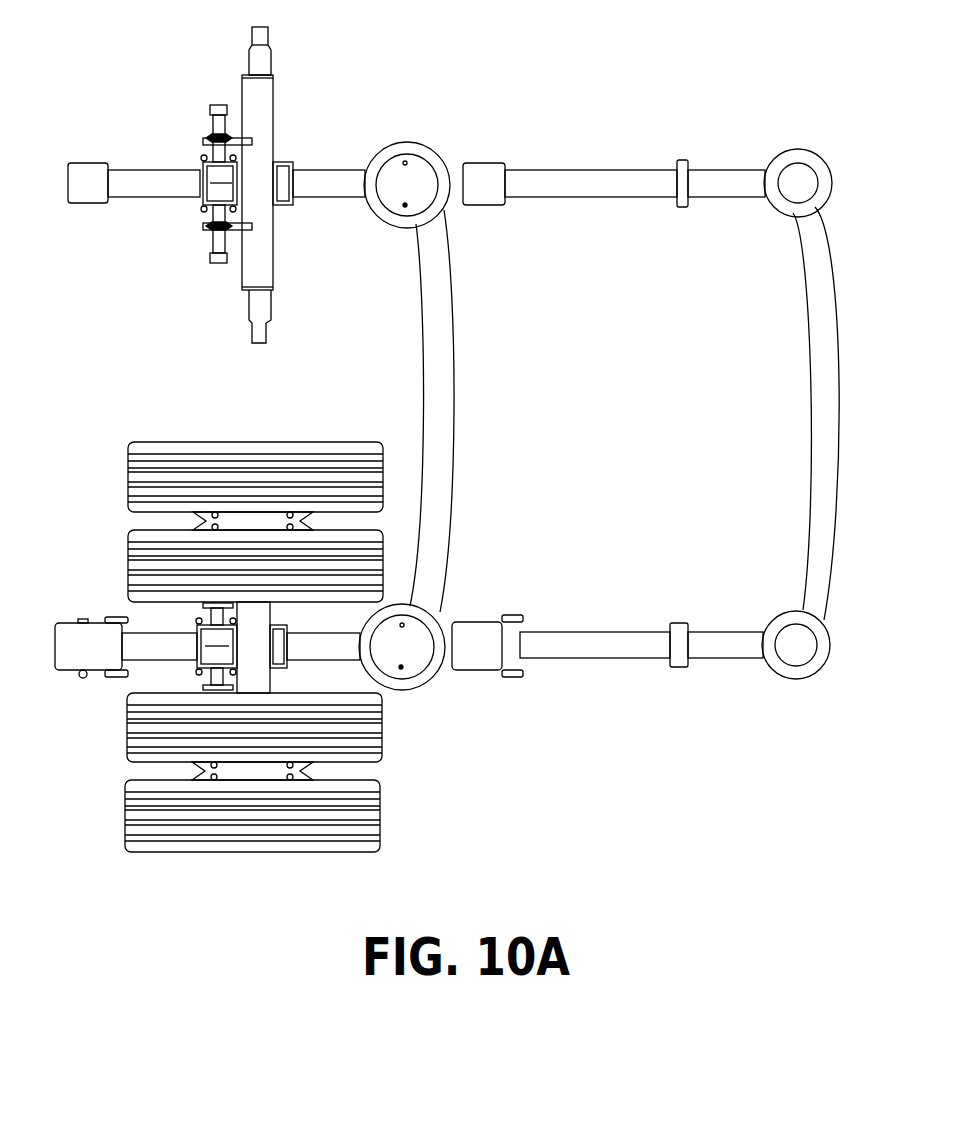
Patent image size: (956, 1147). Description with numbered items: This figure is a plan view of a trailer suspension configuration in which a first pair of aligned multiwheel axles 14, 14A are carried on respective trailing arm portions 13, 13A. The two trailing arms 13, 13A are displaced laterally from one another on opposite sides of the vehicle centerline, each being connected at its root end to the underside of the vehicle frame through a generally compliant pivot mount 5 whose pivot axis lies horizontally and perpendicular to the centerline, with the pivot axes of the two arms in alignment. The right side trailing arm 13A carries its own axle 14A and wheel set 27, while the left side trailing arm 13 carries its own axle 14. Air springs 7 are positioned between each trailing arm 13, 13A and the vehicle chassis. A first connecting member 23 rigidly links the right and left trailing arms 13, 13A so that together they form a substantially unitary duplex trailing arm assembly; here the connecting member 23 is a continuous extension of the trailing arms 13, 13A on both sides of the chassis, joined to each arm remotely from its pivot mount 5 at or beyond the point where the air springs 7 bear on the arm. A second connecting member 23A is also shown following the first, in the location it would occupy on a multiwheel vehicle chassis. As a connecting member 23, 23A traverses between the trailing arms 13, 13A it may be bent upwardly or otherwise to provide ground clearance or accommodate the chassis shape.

The pivot mount 5 is at (70, 643).
The air spring 7 is at (398, 178).
The trailing arm 13 is at (145, 648).
The trailing arm 13A is at (162, 177).
The axle 14 is at (260, 618).
The axle 14A is at (272, 58).
The connecting member 23 is at (455, 400).
The second connecting member 23A is at (813, 400).
The wheel set 27 is at (382, 812).